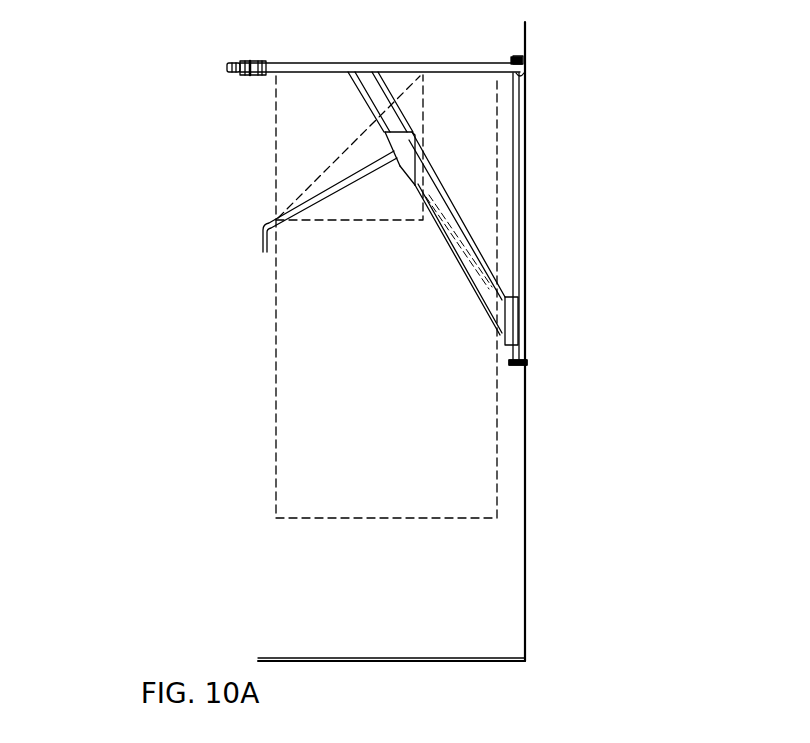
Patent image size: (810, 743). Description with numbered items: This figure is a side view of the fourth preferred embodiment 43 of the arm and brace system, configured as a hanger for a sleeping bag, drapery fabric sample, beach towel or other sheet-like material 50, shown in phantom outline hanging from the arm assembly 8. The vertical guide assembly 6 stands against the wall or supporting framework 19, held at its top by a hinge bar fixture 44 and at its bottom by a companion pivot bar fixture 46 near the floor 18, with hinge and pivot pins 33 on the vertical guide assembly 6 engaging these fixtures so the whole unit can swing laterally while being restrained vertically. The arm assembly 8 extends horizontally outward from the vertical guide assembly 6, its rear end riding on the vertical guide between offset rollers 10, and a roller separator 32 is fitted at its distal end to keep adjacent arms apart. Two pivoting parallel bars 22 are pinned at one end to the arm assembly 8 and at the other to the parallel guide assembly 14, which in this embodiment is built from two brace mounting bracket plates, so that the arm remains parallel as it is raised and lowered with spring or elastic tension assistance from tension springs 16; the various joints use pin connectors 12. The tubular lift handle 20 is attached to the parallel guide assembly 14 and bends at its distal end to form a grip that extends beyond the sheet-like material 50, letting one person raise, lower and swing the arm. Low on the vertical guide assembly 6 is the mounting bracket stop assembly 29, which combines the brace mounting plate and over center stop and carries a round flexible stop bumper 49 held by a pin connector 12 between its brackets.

The fourth preferred embodiment 43 is at (132, 58).
The roller separator 32 is at (213, 50).
The arm assembly 8 is at (380, 37).
The pin connectors 12 is at (349, 71).
The hinge and pivot pins 33 is at (513, 58).
The hinge bar fixture 44 is at (528, 62).
The pivoting parallel bars 22 is at (388, 103).
The offset rollers 10 is at (516, 64).
The lift handle 20 is at (262, 236).
The vertical guide assembly 6 is at (535, 215).
The parallel guide assembly 14 is at (392, 173).
The tension springs 16 is at (468, 258).
The stop bumper 49 is at (502, 327).
The mounting bracket stop assembly 29 is at (532, 316).
The pivot bar fixture 46 is at (520, 365).
The sheet-like material 50 is at (275, 425).
The wall or supporting framework 19 is at (526, 545).
The floor 18 is at (391, 611).